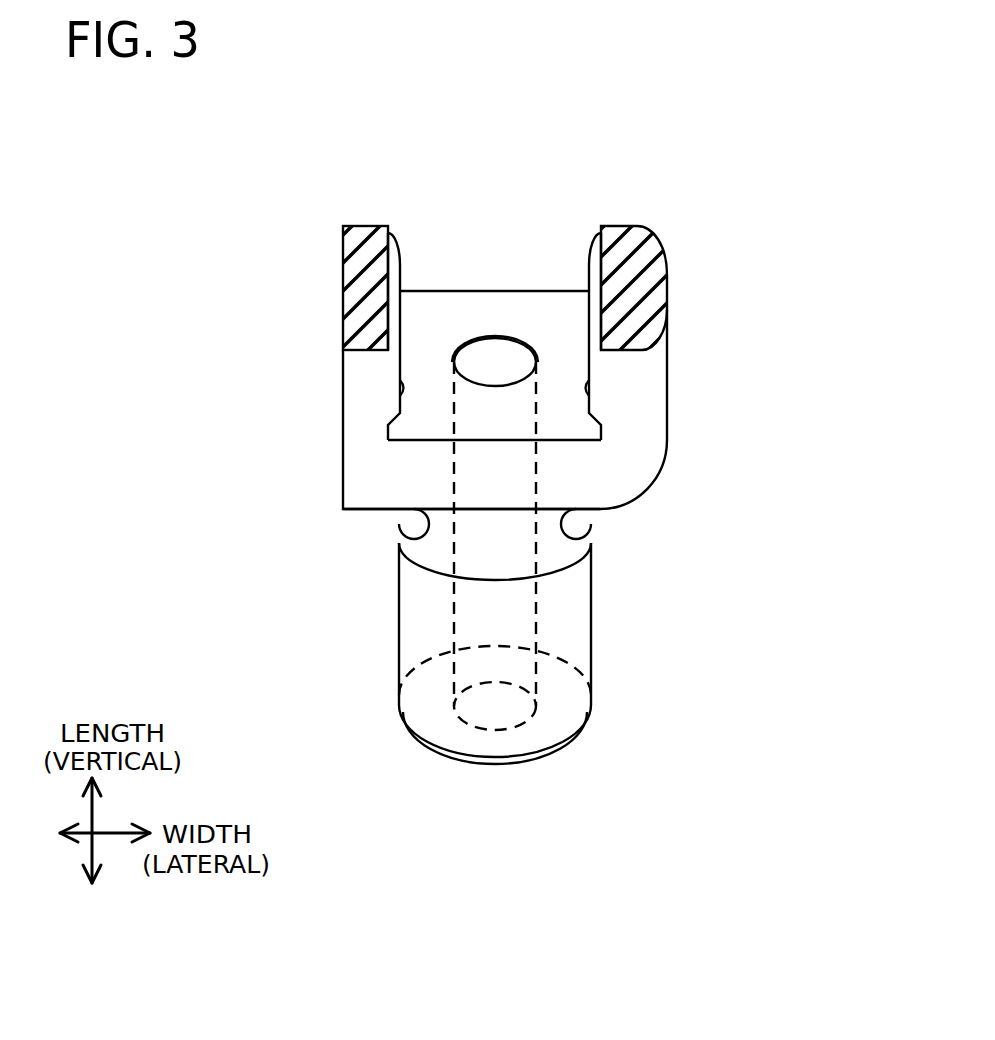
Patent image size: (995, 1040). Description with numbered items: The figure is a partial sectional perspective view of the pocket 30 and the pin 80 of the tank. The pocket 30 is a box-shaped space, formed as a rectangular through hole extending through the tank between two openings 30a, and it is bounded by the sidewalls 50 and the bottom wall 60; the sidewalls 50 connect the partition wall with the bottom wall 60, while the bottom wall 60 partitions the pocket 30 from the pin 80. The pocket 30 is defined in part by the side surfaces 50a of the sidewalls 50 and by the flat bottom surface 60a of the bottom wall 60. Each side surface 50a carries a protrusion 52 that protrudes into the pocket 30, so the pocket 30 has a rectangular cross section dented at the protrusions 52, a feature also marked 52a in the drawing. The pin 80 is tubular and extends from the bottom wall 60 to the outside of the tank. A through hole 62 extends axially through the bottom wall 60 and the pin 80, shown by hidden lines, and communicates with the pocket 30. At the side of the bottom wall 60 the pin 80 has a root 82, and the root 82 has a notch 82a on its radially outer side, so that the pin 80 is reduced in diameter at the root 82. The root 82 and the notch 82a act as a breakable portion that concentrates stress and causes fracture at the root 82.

The pocket 30 is at (558, 393).
The opening 30a is at (575, 250).
The sidewall 50 is at (345, 277).
The side surface 50a is at (392, 325).
The protrusion 52 is at (398, 412).
The protrusion 52a is at (405, 388).
The bottom wall 60 is at (560, 478).
The bottom surface 60a is at (435, 425).
The through hole 62 is at (537, 621).
The pin 80 is at (592, 693).
The root 82 is at (403, 530).
The notch 82a is at (565, 527).